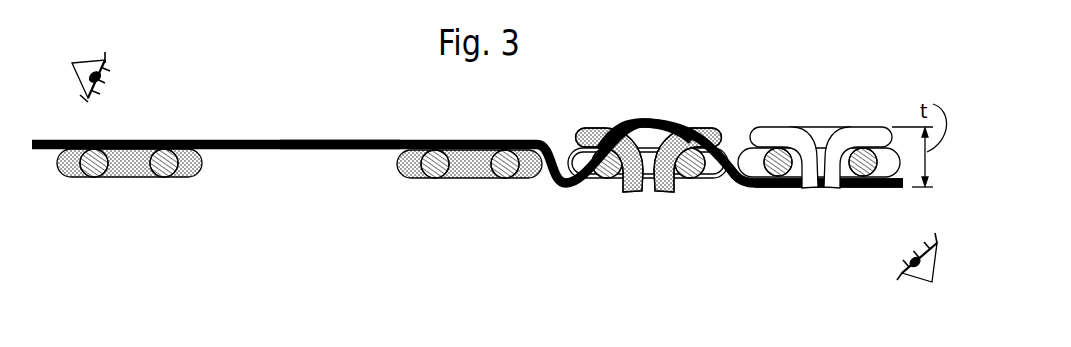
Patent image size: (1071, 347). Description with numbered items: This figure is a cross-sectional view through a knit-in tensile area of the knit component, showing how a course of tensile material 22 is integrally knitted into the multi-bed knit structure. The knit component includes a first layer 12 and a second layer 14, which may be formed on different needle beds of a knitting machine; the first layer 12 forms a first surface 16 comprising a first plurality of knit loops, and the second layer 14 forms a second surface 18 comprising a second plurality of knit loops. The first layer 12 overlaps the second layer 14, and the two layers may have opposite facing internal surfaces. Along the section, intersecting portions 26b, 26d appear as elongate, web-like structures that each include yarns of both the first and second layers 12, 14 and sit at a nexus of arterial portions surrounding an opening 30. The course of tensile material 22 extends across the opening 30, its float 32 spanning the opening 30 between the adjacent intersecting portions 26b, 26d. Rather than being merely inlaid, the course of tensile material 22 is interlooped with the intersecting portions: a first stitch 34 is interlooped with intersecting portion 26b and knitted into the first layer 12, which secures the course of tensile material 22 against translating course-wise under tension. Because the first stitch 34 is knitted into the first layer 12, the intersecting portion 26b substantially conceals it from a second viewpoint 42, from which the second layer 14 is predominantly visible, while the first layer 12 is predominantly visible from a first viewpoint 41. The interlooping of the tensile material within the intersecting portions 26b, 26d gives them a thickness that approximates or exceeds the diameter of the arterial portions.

The first layer 12 is at (815, 132).
The second layer 14 is at (888, 189).
The first surface 16 is at (802, 124).
The second surface 18 is at (710, 178).
The course of tensile material 22 is at (243, 152).
The intersecting portion 26b is at (673, 193).
The intersecting portion 26d is at (136, 178).
The opening 30 is at (342, 158).
The float 32 is at (297, 152).
The first stitch 34 is at (647, 118).
The first viewpoint 41 is at (105, 62).
The second viewpoint 42 is at (900, 273).